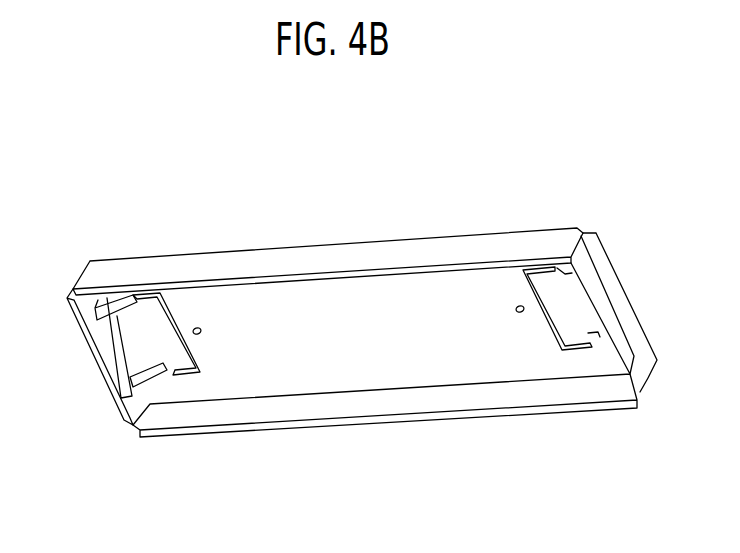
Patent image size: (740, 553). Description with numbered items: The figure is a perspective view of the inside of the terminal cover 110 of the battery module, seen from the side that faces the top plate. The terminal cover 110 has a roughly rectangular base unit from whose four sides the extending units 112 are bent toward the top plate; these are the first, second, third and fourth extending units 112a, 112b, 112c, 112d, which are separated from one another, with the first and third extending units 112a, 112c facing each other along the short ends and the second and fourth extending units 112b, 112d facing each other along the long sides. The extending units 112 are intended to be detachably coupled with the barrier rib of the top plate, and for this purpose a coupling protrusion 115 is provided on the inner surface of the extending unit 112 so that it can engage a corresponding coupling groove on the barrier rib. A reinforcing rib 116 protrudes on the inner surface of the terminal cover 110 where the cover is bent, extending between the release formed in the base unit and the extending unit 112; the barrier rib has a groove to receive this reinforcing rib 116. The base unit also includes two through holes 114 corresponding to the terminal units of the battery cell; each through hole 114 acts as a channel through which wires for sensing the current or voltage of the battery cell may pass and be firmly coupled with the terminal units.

The terminal cover 110 is at (163, 232).
The extending unit 112 is at (444, 156).
The first extending unit 112a is at (77, 340).
The second extending unit 112b is at (321, 262).
The third extending unit 112c is at (577, 247).
The fourth extending unit 112d is at (600, 409).
The through hole 114 is at (200, 335).
The coupling protrusion 115 is at (122, 348).
The reinforcing rib 116 is at (121, 394).